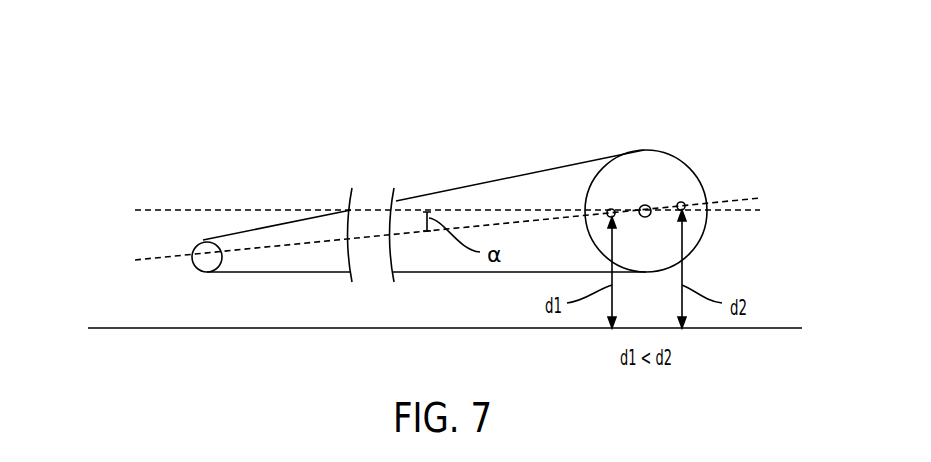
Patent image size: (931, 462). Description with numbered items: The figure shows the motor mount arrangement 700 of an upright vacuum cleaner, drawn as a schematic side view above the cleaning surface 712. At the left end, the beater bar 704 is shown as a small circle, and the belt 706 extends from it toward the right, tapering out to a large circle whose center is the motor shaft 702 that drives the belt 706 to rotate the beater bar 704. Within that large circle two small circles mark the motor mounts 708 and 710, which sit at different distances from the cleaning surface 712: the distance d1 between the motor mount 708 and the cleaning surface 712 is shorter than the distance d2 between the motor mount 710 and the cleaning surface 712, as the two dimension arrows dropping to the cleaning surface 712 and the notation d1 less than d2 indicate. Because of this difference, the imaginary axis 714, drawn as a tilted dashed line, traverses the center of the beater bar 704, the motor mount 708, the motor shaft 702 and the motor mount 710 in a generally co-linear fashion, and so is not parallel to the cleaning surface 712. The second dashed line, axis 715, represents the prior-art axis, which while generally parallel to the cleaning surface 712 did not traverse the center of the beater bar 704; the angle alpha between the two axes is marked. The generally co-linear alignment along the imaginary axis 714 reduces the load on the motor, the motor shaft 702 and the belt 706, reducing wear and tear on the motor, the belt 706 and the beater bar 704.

The sensor system 700 is at (255, 111).
The motor shaft 702 is at (648, 204).
The beater bar 704 is at (217, 267).
The belt 706 is at (518, 172).
The motor mount 708 is at (610, 209).
The motor mount 710 is at (683, 202).
The cleaning surface 712 is at (128, 329).
The imaginary axis 714 is at (135, 260).
The axis 715 is at (145, 208).